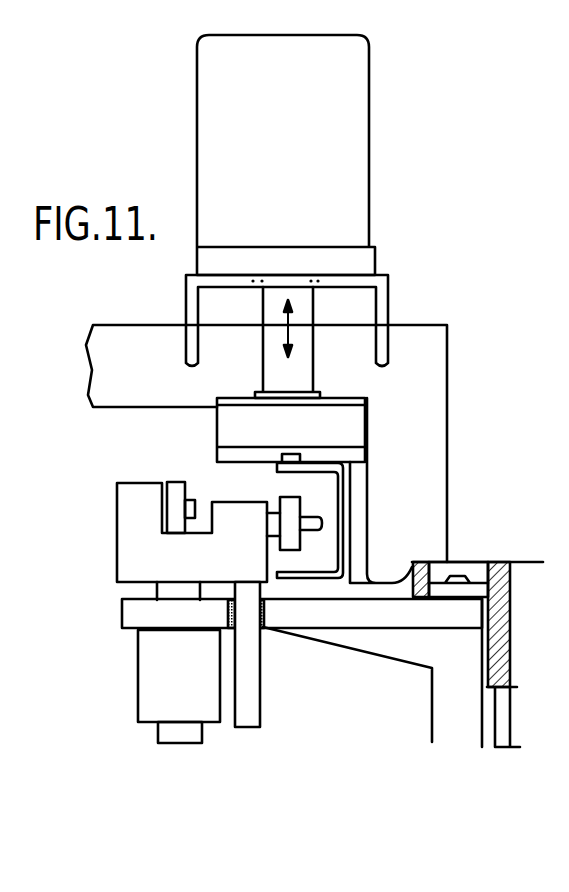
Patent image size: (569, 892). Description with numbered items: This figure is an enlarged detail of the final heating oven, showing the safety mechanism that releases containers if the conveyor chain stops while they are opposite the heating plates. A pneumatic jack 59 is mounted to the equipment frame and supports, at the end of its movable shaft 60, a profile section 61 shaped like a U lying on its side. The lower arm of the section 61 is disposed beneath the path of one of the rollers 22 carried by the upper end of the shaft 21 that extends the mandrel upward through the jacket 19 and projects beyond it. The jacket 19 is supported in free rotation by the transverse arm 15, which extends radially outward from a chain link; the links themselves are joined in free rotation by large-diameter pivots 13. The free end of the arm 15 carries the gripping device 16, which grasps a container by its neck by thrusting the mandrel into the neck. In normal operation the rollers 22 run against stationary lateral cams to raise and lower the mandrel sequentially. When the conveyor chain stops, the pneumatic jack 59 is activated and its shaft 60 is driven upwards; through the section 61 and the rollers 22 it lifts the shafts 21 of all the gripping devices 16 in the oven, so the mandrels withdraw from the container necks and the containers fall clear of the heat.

The pneumatic jack 59 is at (333, 198).
The movable shaft 60 is at (300, 363).
The profile section 61 is at (347, 498).
The rollers 22 is at (290, 538).
The gripping device 16 is at (136, 666).
The transverse arm 15 is at (293, 612).
The jacket 19 is at (158, 690).
The shaft 21 is at (170, 729).
The pivots 13 is at (463, 678).